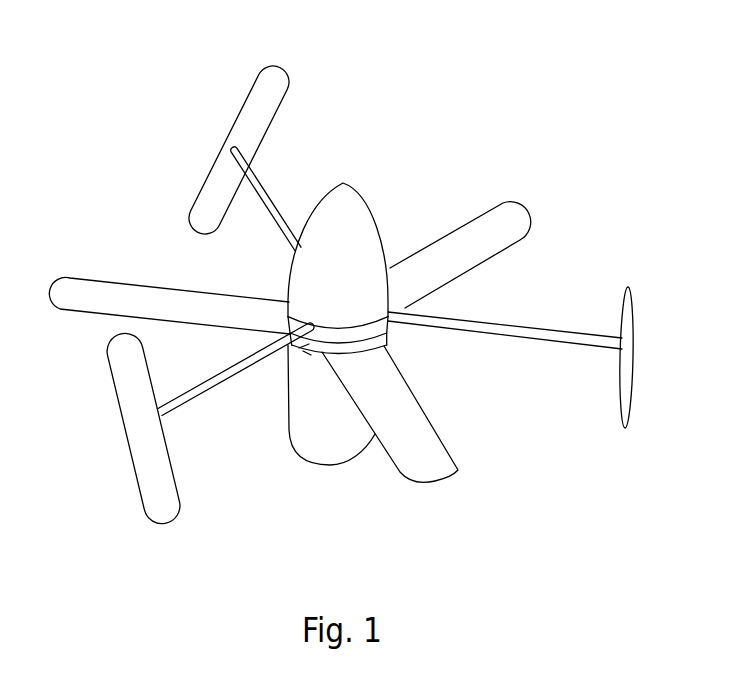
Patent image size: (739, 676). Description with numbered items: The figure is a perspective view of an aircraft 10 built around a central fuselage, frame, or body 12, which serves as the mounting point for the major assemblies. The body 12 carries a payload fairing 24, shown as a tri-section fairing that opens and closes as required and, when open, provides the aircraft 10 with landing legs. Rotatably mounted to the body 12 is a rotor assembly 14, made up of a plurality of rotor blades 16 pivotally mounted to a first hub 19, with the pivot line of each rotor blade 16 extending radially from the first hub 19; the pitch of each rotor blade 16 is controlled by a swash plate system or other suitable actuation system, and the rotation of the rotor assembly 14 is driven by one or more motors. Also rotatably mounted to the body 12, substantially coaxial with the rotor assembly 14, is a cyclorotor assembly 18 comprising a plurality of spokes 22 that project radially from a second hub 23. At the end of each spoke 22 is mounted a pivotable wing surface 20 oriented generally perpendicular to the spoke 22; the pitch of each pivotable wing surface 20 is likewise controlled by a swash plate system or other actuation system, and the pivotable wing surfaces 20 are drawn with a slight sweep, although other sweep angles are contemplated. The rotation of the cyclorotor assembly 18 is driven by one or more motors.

The aircraft 10 is at (449, 66).
The body 12 is at (362, 197).
The rotor assembly 14 is at (493, 176).
The rotor blade 16 is at (137, 283).
The cyclorotor assembly 18 is at (612, 273).
The first hub 19 is at (303, 351).
The pivotable wing surface 20 is at (217, 155).
The spoke 22 is at (268, 210).
The second hub 23 is at (385, 334).
The payload fairing 24 is at (313, 453).